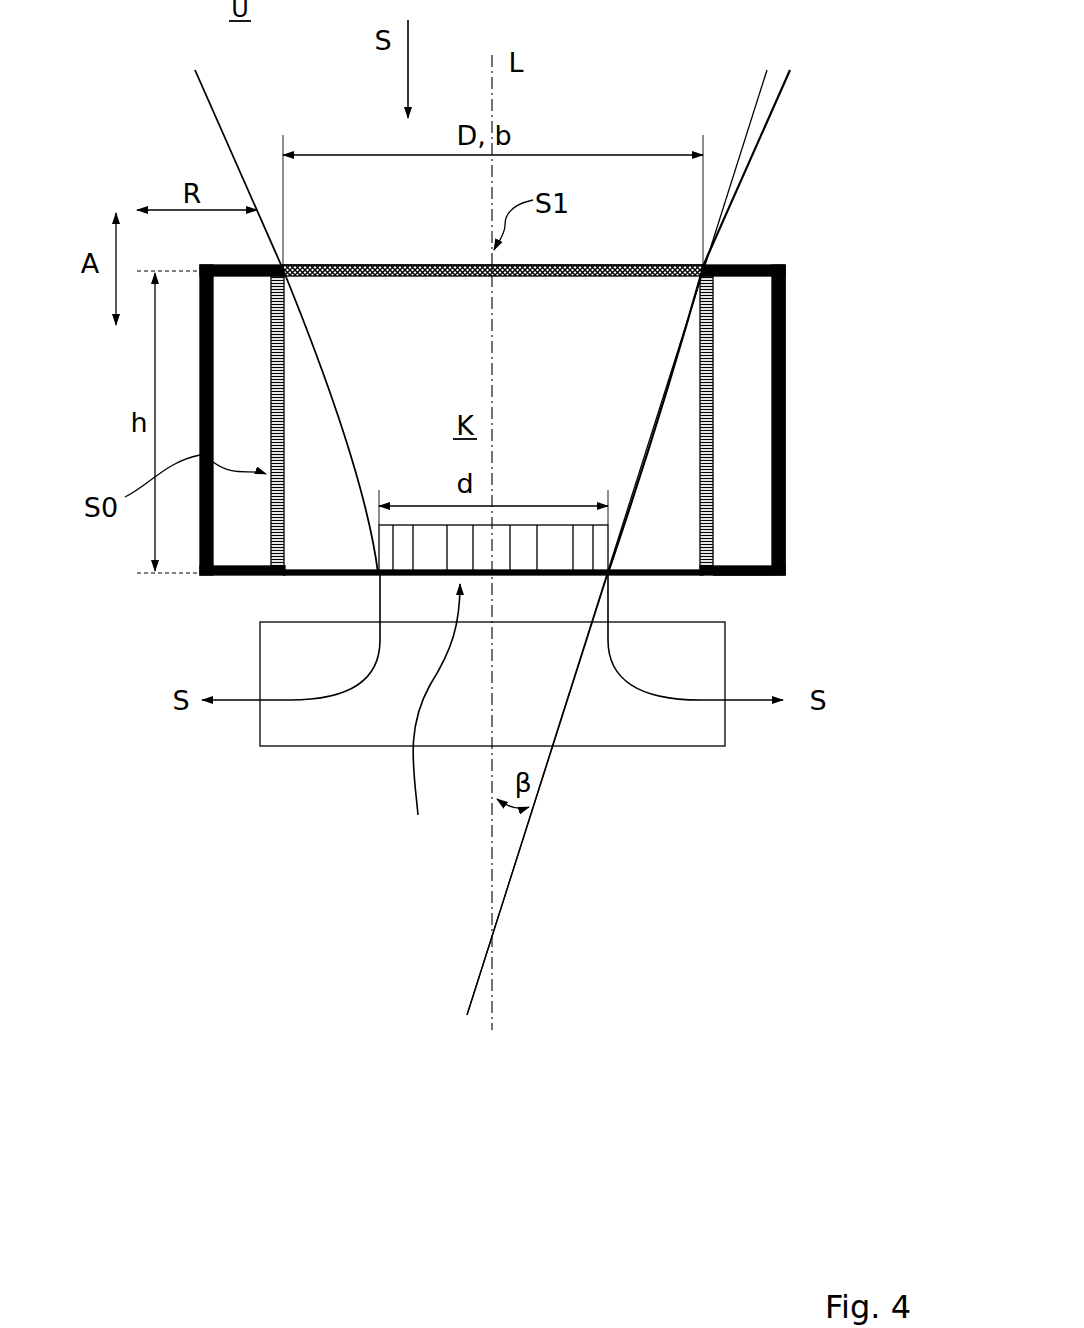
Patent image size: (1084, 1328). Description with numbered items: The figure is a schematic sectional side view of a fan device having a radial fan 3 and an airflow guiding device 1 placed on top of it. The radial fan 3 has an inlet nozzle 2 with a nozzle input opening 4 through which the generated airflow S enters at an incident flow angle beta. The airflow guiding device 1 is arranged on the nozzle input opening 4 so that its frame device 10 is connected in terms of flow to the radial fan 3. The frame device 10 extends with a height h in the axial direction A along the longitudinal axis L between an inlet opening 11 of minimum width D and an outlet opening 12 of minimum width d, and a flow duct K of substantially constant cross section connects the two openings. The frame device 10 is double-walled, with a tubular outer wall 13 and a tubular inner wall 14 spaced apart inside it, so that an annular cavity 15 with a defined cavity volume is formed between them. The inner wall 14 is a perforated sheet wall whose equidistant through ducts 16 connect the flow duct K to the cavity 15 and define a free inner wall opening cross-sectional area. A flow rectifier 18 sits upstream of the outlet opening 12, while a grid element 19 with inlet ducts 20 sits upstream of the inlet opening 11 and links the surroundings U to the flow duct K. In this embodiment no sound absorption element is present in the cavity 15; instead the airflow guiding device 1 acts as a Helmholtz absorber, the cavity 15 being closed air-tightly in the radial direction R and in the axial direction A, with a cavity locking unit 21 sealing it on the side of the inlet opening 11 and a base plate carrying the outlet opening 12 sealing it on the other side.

The airflow guiding device 1 is at (658, 86).
The inlet nozzle 2 is at (613, 600).
The radial fan 3 is at (570, 746).
The nozzle input opening 4 is at (434, 716).
The frame device 10 is at (796, 420).
The inlet opening 11 is at (556, 258).
The outlet opening 12 is at (418, 567).
The outer wall 13 is at (786, 300).
The inner wall 14 is at (262, 575).
The cavity 15 is at (768, 582).
The through ducts 16 is at (713, 515).
The flow rectifier 18 is at (618, 520).
The grid element 19 is at (795, 262).
The inlet ducts 20 is at (372, 265).
The cavity locking unit 21 is at (745, 265).